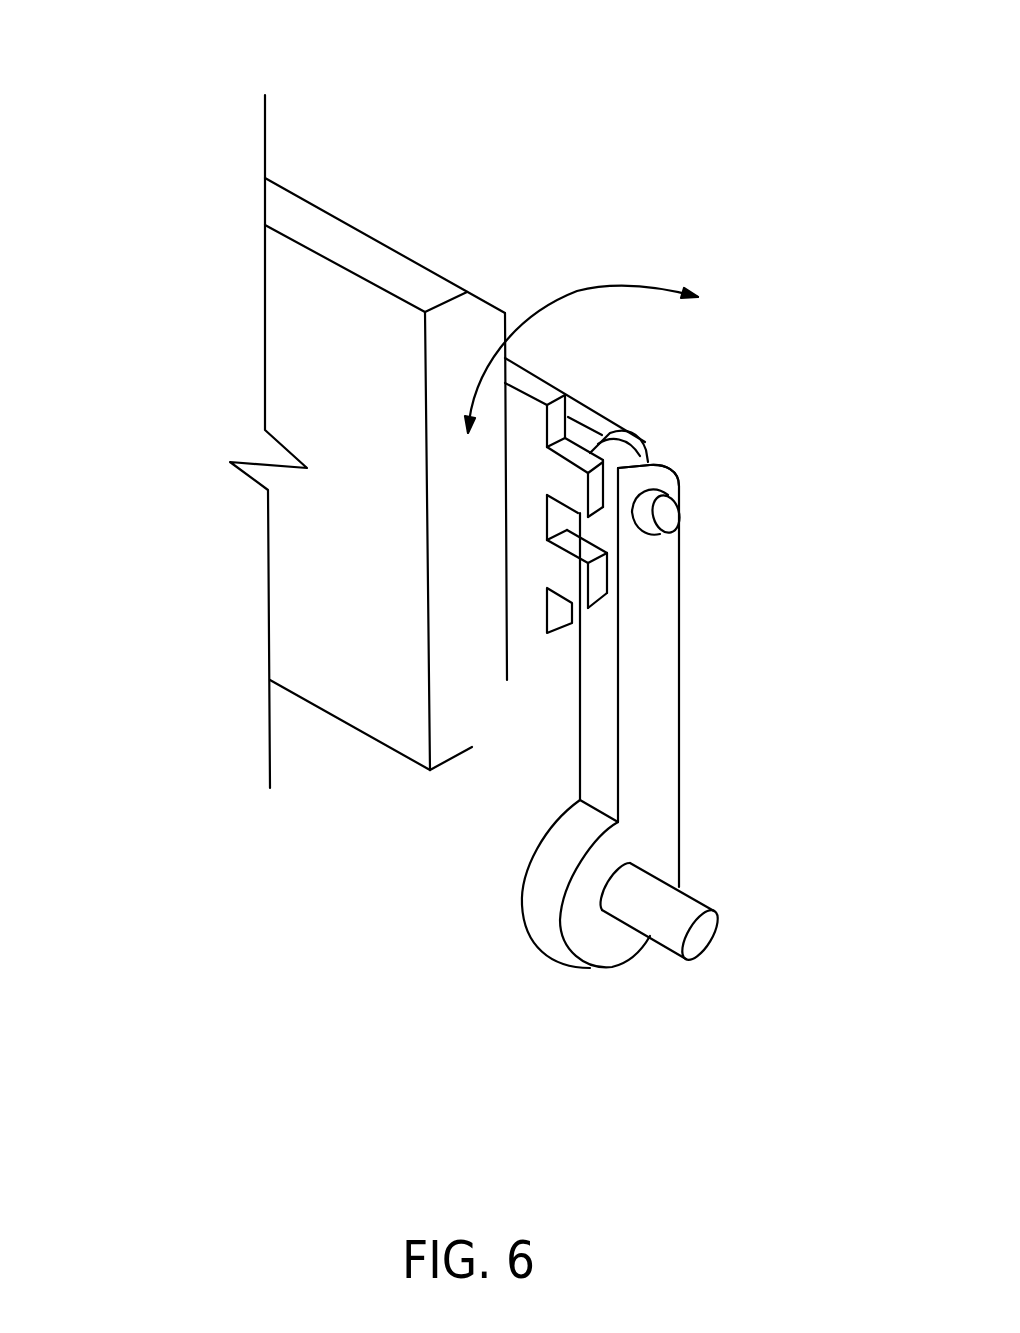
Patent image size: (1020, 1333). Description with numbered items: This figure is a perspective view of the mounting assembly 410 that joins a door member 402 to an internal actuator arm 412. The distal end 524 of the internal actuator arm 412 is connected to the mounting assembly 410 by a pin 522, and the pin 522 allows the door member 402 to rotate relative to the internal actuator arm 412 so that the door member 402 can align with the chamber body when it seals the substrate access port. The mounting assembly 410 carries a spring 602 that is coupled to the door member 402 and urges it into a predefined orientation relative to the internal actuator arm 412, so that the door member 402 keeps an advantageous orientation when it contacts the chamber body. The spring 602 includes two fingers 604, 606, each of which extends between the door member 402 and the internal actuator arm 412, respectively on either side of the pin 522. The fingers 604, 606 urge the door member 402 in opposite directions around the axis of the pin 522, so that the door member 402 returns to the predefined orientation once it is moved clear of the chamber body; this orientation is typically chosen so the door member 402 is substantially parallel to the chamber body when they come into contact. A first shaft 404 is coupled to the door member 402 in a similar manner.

The door member 402 is at (372, 257).
The first shaft 404 is at (662, 915).
The mounting assembly 410 is at (596, 432).
The internal actuator arm 412 is at (715, 787).
The pin 522 is at (672, 514).
The distal end 524 is at (670, 467).
The spring 602 is at (350, 665).
The finger 604 is at (573, 483).
The finger 606 is at (573, 573).